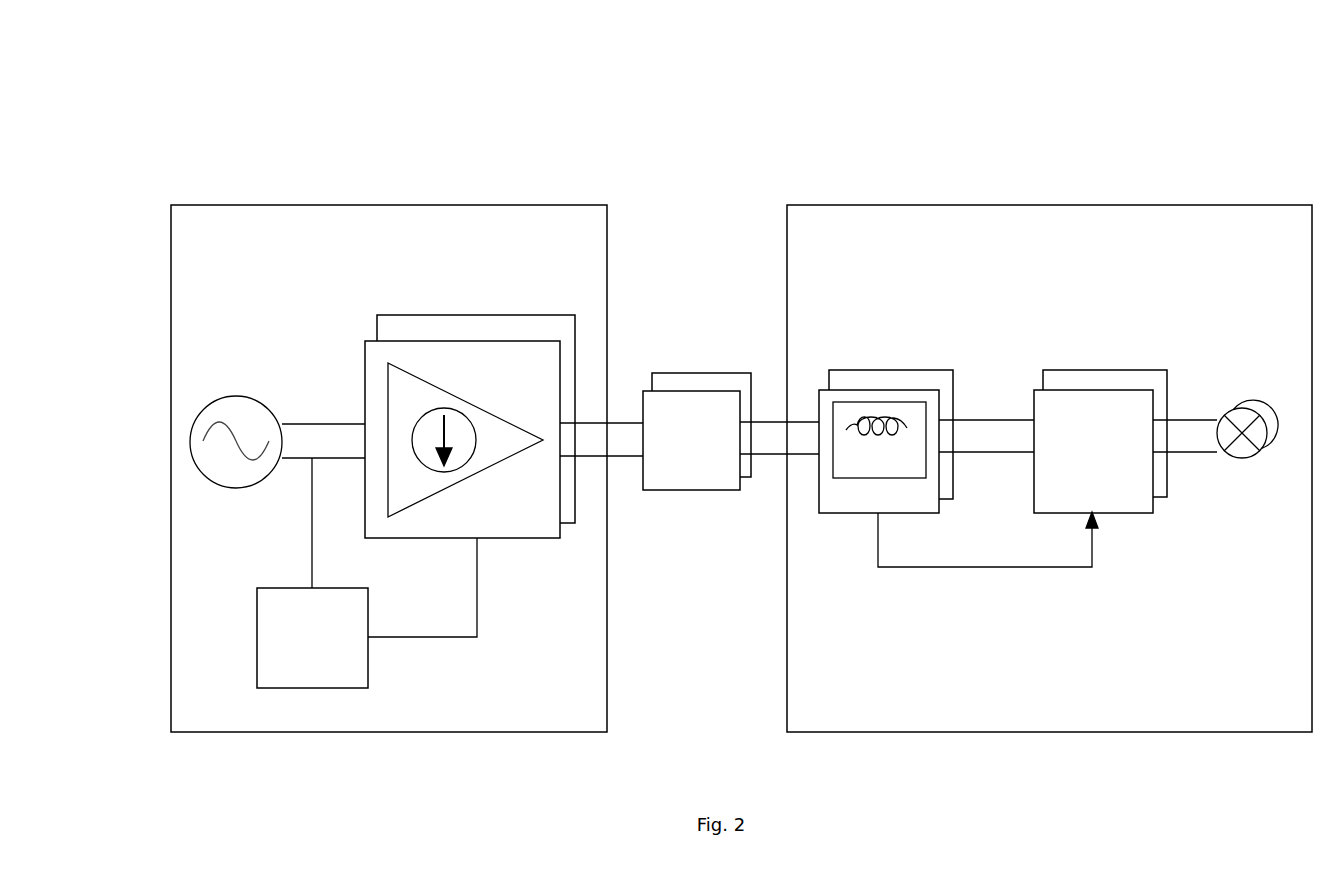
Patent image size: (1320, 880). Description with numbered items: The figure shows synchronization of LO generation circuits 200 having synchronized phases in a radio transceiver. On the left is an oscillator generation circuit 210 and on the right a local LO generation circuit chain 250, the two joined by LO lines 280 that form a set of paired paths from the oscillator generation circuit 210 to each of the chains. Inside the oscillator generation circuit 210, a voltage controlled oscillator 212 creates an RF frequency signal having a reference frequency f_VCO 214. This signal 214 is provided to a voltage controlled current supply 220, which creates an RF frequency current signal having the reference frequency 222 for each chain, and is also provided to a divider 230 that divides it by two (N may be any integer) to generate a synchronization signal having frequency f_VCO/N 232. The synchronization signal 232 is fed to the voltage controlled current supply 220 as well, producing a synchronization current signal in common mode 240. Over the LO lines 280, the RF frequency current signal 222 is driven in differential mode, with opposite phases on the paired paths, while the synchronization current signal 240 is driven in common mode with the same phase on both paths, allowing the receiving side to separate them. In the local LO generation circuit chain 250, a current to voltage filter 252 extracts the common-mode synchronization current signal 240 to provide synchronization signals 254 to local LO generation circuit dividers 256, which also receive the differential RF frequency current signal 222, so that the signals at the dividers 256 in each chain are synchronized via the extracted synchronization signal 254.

The LO generation circuits 200 is at (228, 128).
The oscillator generation circuit 210 is at (330, 205).
The voltage controlled oscillator 212 is at (244, 396).
The RF frequency signal having reference frequency f_VCO 214 is at (308, 468).
The voltage controlled current supply 220 is at (447, 538).
The RF frequency current signal having reference frequency f_VCO 222 is at (597, 408).
The divider 230 is at (257, 637).
The synchronization signal having frequency f_VCO/N 232 is at (400, 637).
The synchronization current signal having frequency f_VCO/N in common mode 240 is at (594, 473).
The local LO generation circuit chain 250 is at (890, 205).
The current to voltage filter 252 is at (868, 513).
The synchronization signals 254 is at (1062, 567).
The local LO generation circuit dividers 256 is at (1108, 513).
The LO lines 280 is at (688, 490).